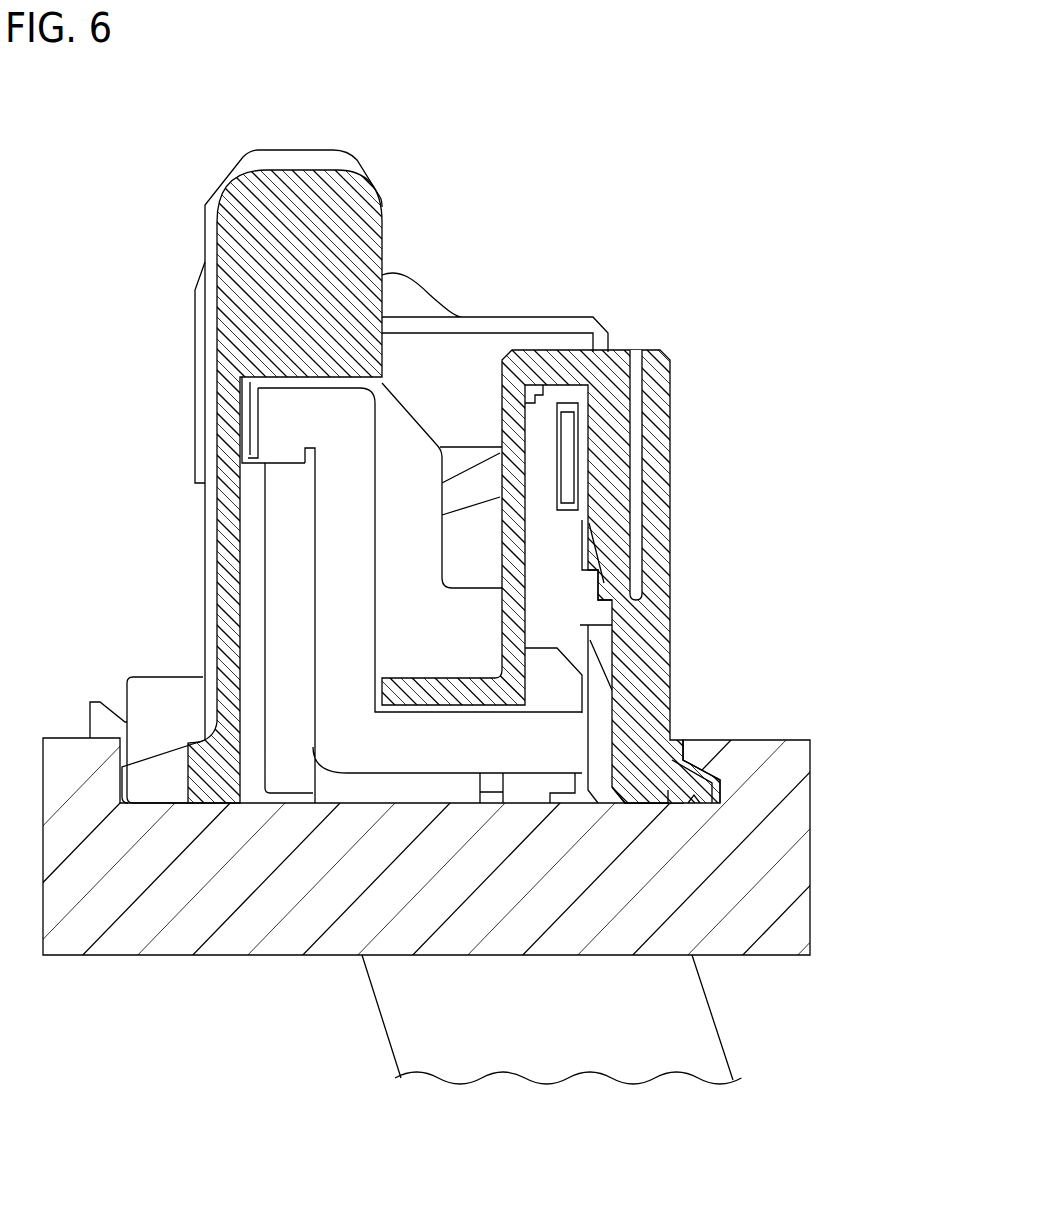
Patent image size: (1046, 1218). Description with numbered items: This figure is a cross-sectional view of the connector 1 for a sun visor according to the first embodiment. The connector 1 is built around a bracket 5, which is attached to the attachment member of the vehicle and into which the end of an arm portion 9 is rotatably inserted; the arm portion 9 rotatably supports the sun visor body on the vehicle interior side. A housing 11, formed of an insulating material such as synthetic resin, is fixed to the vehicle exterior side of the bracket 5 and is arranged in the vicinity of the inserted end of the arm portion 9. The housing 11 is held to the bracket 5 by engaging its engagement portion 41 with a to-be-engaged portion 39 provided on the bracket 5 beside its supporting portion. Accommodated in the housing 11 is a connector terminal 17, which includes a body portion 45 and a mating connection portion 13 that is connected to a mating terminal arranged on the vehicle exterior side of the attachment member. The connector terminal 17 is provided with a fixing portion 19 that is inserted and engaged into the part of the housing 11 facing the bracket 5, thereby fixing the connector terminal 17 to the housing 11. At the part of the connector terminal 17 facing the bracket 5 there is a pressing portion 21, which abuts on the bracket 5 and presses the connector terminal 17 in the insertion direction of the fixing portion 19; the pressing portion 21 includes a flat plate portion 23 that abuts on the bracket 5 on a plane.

The connector 1 is at (493, 140).
The bracket 5 is at (827, 873).
The arm portion 9 is at (725, 1007).
The housing 11 is at (672, 343).
The mating connection portion 13 is at (563, 518).
The connector terminal 17 is at (375, 378).
The fixing portion 19 is at (247, 389).
The pressing portion 21 is at (526, 812).
The flat plate portion 23 is at (563, 792).
The to-be-engaged portion 39 is at (703, 777).
The engagement portion 41 is at (670, 808).
The body portion 45 is at (328, 550).